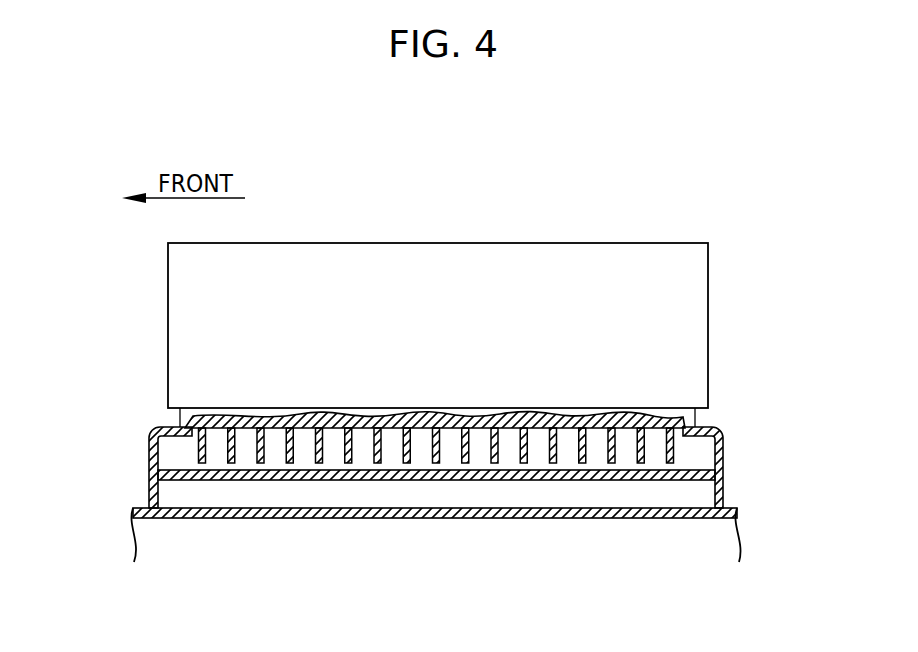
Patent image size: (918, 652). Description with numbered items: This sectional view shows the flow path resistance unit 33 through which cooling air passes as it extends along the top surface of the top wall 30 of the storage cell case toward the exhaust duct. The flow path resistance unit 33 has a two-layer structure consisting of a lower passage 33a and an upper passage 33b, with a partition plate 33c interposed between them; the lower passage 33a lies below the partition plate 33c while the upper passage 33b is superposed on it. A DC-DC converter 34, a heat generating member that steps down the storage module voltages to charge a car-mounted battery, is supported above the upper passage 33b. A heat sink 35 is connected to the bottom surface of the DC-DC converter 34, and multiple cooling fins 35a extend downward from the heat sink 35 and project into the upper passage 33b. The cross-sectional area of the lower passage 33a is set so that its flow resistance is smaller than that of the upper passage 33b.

The top wall 30 is at (673, 508).
The flow path resistance unit 33 is at (736, 462).
The lower passage 33a is at (174, 493).
The upper passage 33b is at (174, 452).
The partition plate 33c is at (495, 481).
The DC-DC converter 34 is at (543, 303).
The heat sink 35 is at (366, 400).
The cooling fins 35a is at (202, 463).